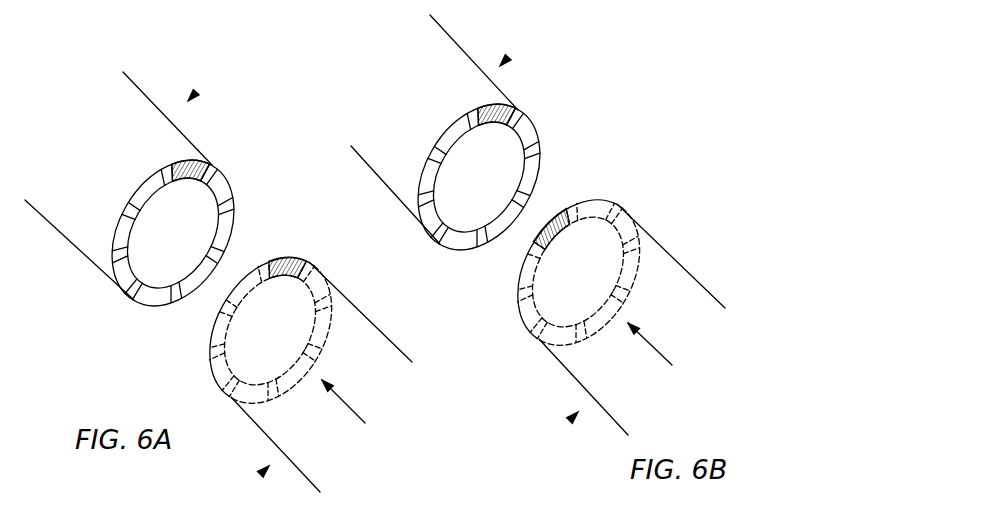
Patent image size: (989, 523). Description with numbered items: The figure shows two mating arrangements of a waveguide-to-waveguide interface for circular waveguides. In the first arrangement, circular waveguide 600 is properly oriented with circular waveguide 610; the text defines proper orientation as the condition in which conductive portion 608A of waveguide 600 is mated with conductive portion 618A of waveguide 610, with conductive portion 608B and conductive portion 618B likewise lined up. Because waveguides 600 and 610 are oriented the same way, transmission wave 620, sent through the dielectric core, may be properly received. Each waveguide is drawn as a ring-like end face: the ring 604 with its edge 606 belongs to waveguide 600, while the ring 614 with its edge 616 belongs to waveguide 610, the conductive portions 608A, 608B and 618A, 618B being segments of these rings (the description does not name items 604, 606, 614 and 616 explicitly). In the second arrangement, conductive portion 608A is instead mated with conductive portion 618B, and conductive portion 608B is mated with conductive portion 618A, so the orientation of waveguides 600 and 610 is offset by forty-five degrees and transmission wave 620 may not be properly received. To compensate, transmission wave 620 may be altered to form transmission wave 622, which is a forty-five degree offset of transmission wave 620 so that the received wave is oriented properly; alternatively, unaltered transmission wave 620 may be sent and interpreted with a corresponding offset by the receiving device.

In FIG. 6A, the circular waveguide 600 is at (188, 101).
In FIG. 6B, the circular waveguide 600 is at (500, 66).
In FIG. 6A, the first marker band 604 is at (194, 229).
In FIG. 6B, the first marker band 604 is at (502, 173).
In FIG. 6A, the tubular member wall 606 is at (150, 308).
In FIG. 6B, the tubular member wall 606 is at (577, 161).
In FIG. 6A, the conductive portion 608A is at (185, 160).
In FIG. 6B, the conductive portion 608A is at (492, 100).
In FIG. 6A, the conductive portion 608B is at (221, 184).
In FIG. 6B, the conductive portion 608B is at (529, 128).
In FIG. 6A, the circular waveguide 610 is at (269, 466).
In FIG. 6B, the circular waveguide 610 is at (578, 412).
In FIG. 6A, the second marker band 614 is at (267, 320).
In FIG. 6B, the second marker band 614 is at (582, 264).
In FIG. 6A, the outer edge of second marker band 616 is at (212, 378).
In FIG. 6A, the conductive portion 618A is at (288, 256).
In FIG. 6B, the conductive portion 618A is at (557, 210).
In FIG. 6A, the conductive portion 618B is at (320, 282).
In FIG. 6B, the conductive portion 618B is at (596, 208).
In FIG. 6A, the transmission wave 620 is at (362, 412).
In FIG. 6B, the transmission wave 622 is at (667, 353).